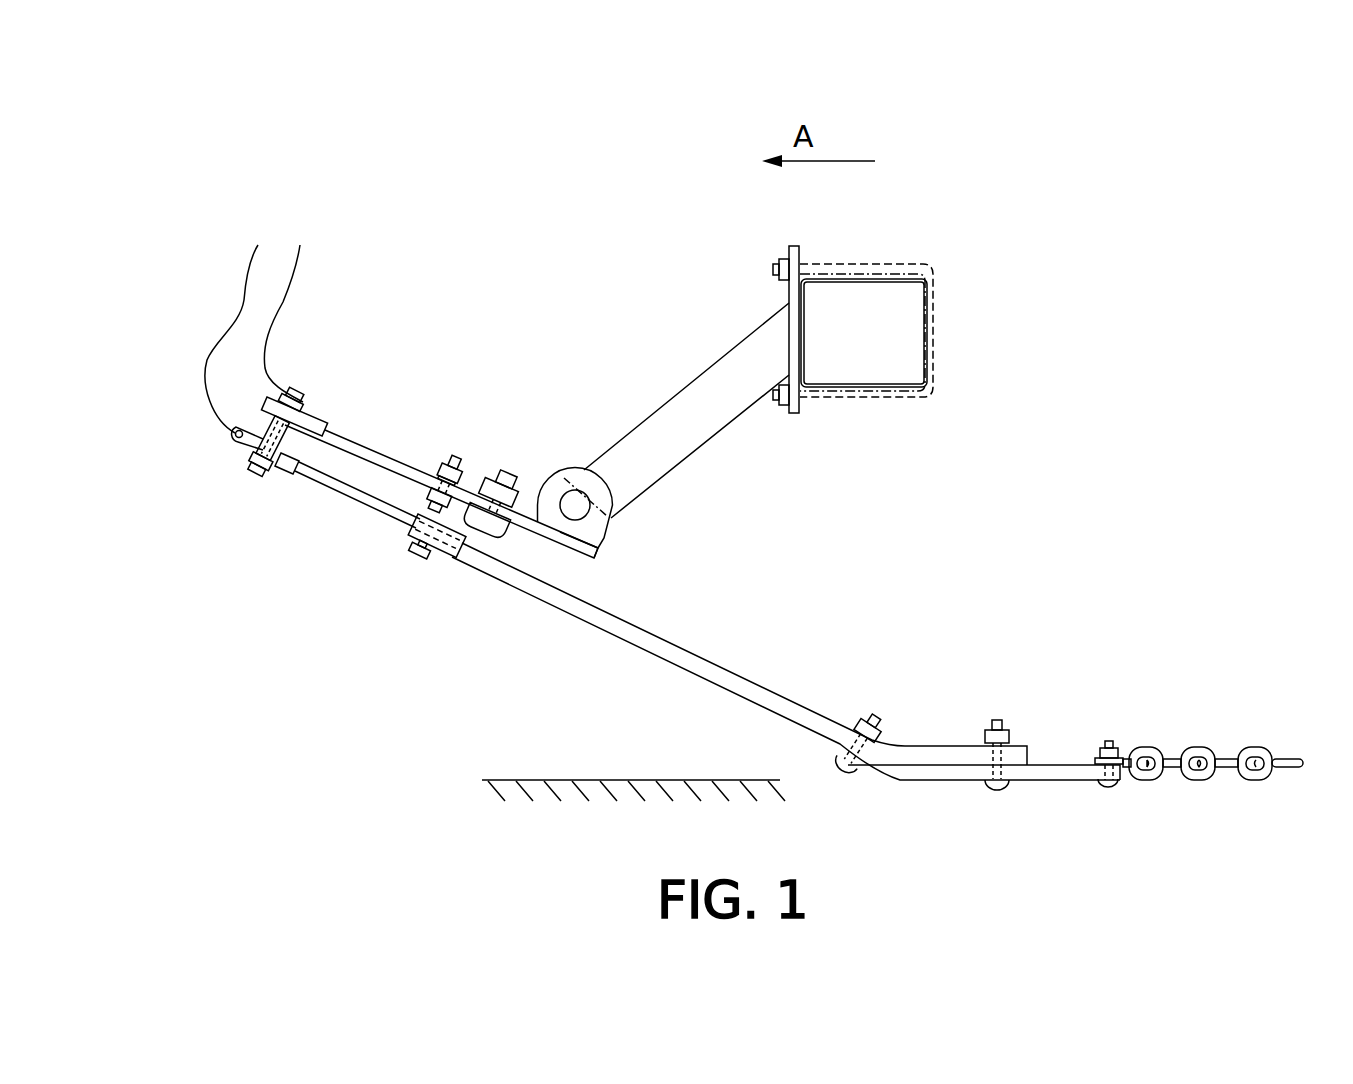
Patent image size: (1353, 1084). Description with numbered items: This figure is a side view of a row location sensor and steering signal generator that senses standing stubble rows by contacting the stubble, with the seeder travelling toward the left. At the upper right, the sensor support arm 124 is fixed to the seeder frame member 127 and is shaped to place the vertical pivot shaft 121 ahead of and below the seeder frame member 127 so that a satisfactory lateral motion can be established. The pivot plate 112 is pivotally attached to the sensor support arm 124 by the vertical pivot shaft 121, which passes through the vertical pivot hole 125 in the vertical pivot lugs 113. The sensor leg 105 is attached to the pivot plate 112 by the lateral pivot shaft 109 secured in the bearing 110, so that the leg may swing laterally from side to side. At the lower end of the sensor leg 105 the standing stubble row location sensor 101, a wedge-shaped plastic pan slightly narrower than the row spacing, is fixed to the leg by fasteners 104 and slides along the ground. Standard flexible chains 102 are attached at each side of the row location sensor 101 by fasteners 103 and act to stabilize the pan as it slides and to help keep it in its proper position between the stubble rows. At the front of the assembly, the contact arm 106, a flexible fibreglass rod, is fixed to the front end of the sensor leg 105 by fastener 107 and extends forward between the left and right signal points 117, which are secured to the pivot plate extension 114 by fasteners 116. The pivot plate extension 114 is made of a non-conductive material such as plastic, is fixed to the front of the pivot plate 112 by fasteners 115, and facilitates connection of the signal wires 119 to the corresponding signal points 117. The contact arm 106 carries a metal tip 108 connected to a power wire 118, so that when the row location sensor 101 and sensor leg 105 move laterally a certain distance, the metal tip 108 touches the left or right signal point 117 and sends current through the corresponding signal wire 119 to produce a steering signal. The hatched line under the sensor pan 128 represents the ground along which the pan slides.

The standing stubble row location sensor 101 is at (938, 786).
The flexible chains 102 is at (1205, 737).
The fasteners 103 is at (1113, 730).
The fasteners 104 is at (996, 712).
The sensor leg 105 is at (722, 664).
The contact arm 106 is at (339, 499).
The fastener 107 is at (413, 560).
The metal tip 108 is at (283, 476).
The lateral pivot shaft 109 is at (513, 462).
The bearing 110 is at (485, 470).
The pivot plate 112 is at (614, 553).
The vertical pivot lugs 113 is at (612, 525).
The pivot plate extension 114 is at (353, 438).
The fasteners 115 is at (443, 450).
The fasteners 116 is at (313, 393).
The signal points 117 is at (295, 437).
The power wire 118 is at (210, 356).
The signal wires 119 is at (288, 299).
The vertical pivot shaft 121 is at (583, 498).
The sensor support arm 124 is at (710, 442).
The vertical pivot hole 125 is at (566, 487).
The seeder frame member 127 is at (917, 337).
The ground 128 is at (588, 777).